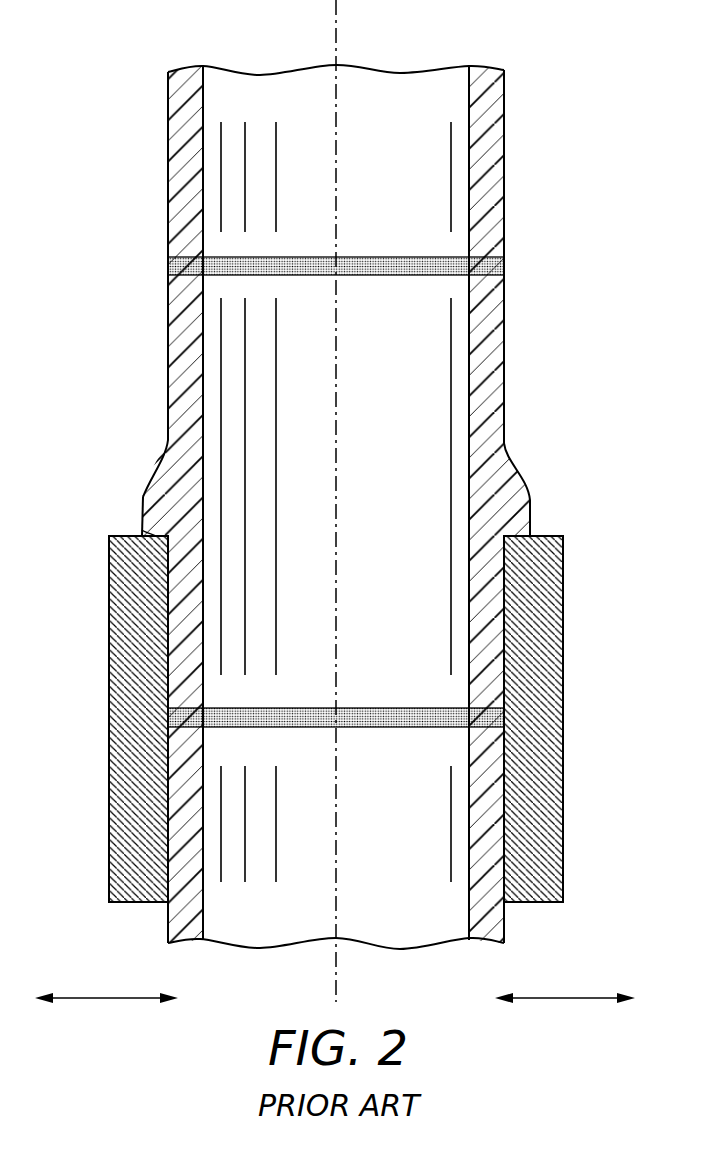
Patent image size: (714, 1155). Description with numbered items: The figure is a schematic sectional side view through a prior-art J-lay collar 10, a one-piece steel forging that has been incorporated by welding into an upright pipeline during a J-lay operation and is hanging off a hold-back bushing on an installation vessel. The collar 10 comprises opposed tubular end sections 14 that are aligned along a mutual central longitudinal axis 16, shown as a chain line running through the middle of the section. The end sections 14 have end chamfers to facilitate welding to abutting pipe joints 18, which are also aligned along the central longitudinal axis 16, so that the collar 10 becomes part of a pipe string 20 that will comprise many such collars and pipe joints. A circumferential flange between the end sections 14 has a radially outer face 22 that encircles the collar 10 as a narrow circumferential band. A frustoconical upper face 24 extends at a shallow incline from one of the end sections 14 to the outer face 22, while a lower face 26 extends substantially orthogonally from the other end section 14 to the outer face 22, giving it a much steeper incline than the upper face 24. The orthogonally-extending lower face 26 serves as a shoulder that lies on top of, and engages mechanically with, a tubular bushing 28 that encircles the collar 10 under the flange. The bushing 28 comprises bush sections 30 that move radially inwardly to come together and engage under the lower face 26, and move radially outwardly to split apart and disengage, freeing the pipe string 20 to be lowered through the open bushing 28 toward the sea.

The J-lay collar 10 is at (136, 345).
The tubular end sections 14 is at (507, 358).
The central longitudinal axis 16 is at (338, 14).
The pipe joints 18 is at (507, 143).
The pipe string 20 is at (136, 128).
The radially outer face 22 is at (533, 512).
The frustoconical upper face 24 is at (517, 460).
The lower face 26 is at (148, 533).
The bushing 28 is at (82, 743).
The bush sections 30 is at (106, 652).